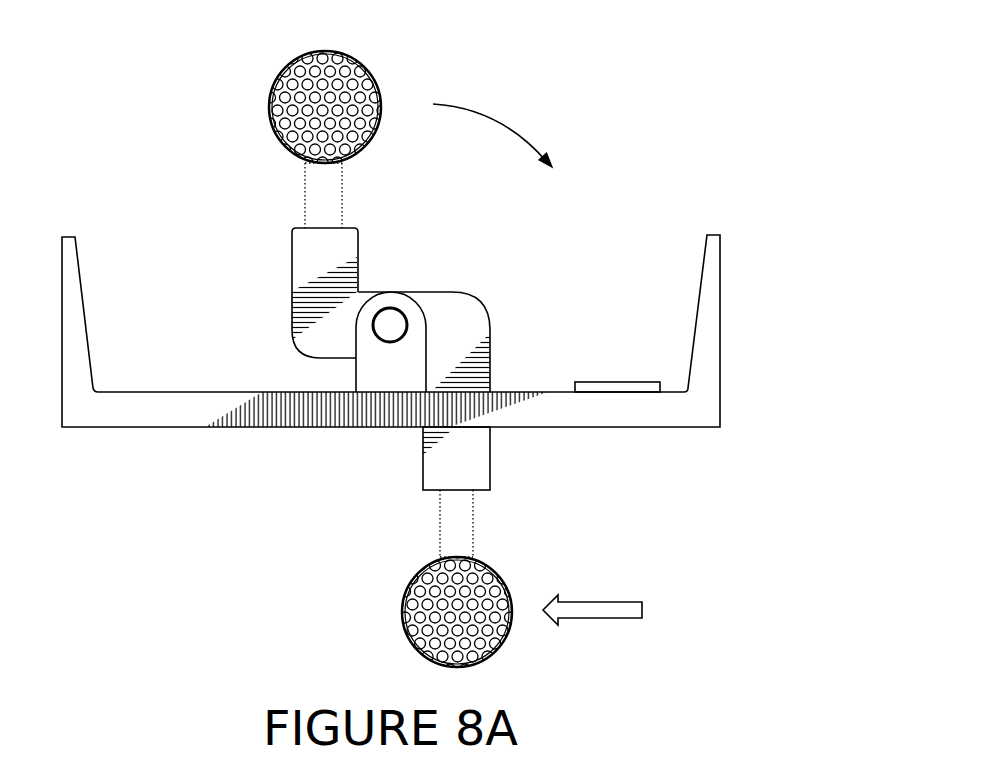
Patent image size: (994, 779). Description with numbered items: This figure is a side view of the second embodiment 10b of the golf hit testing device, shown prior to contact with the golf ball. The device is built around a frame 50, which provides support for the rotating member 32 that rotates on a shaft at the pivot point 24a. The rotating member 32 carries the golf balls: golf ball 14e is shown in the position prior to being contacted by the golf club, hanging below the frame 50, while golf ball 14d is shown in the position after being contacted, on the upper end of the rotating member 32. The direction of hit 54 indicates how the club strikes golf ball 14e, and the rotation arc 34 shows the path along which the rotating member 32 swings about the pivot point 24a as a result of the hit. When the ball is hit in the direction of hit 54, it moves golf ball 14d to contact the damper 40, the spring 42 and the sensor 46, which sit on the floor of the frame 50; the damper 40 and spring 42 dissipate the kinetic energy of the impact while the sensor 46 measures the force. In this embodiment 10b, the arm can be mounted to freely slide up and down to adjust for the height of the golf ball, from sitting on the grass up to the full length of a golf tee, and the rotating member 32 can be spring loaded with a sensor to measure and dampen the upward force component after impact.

The second embodiment of present invention 10b is at (745, 75).
The rotation arc of rotating arm 34 is at (487, 117).
The golf ball 14d is at (367, 141).
The rotating member 32 is at (490, 345).
The pivot point 24a is at (390, 326).
The damper 40 is at (607, 305).
The spring 42 is at (617, 387).
The sensor 46 is at (645, 382).
The frame 50 is at (718, 278).
The golf ball 14e is at (507, 584).
The direction of hit 54 is at (603, 601).